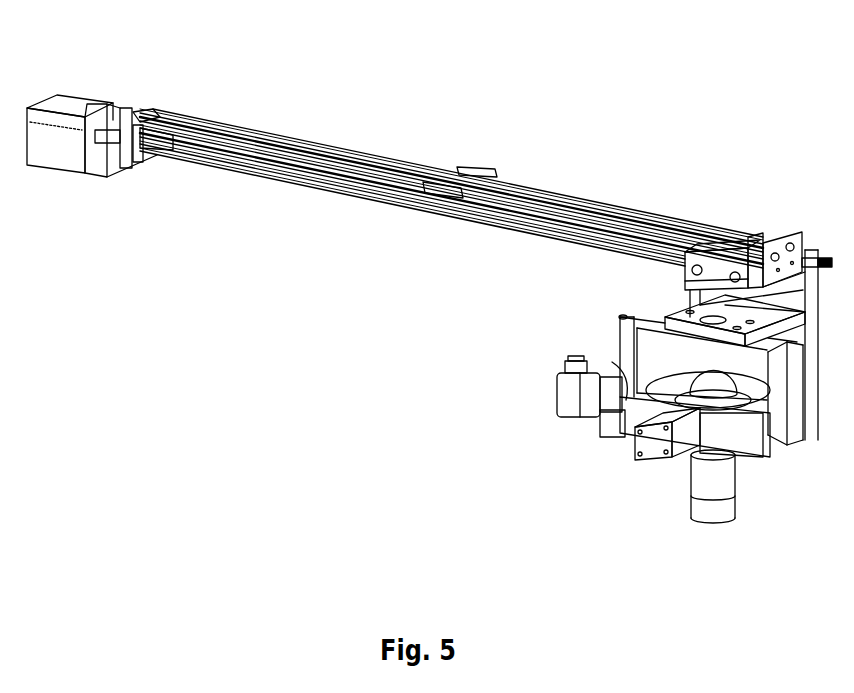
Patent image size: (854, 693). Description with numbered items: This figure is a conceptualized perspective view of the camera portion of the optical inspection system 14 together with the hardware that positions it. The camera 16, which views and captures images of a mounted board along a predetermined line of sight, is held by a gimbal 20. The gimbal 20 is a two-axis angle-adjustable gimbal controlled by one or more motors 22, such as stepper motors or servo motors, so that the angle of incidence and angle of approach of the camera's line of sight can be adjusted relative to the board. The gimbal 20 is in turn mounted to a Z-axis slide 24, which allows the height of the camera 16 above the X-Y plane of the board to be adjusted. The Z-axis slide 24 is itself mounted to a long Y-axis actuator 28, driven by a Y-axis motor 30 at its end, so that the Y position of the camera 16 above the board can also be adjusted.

The system 14 is at (56, 504).
The camera 16 is at (742, 527).
The gimbal 20 is at (606, 443).
The motors 22 is at (573, 395).
The Z-axis slide 24 is at (811, 425).
The Y-axis actuator 28 is at (410, 187).
The Y-axis motor 30 is at (75, 108).